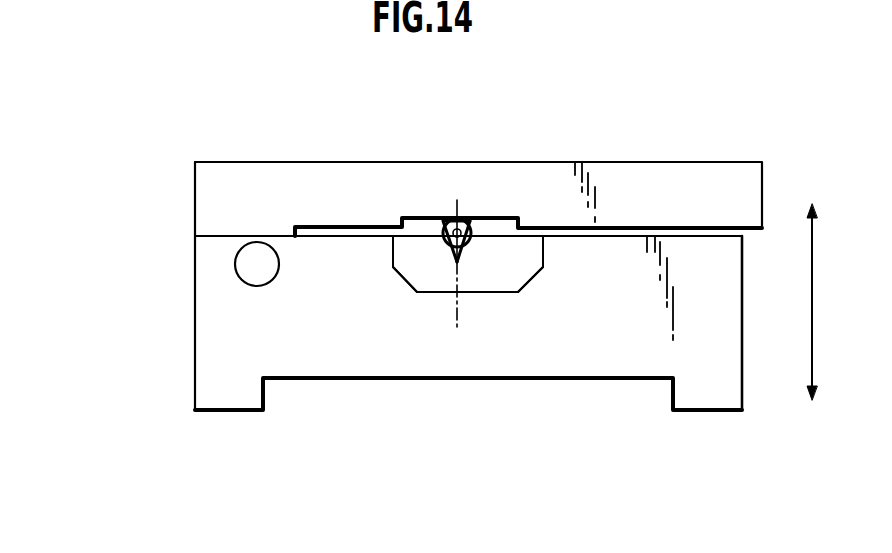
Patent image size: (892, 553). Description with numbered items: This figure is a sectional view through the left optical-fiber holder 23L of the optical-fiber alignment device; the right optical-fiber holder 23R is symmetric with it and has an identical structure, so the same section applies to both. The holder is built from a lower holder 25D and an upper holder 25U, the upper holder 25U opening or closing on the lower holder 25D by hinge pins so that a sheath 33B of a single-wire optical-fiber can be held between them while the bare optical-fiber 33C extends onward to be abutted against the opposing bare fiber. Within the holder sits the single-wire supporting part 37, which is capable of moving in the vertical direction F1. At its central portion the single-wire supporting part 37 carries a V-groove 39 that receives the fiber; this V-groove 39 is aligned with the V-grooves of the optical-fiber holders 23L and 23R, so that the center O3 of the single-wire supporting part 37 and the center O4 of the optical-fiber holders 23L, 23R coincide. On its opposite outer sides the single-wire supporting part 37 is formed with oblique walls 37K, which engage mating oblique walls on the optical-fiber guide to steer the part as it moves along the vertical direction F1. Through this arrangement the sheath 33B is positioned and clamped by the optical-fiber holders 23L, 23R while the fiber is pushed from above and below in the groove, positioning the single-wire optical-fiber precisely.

The left optical-fiber holder 23L is at (407, 267).
The right optical-fiber holder 23R is at (478, 267).
The upper holder 25U is at (297, 182).
The lower holder 25D is at (307, 353).
The single-wire supporting part 37 is at (530, 257).
The oblique walls 37K is at (405, 285).
The V-groove 39 is at (443, 230).
The sheath 33B is at (436, 221).
The bare optical-fiber 33C is at (471, 221).
The center of the single-wire supporting part O3 is at (455, 270).
The center of the optical-fiber holders O4 is at (458, 313).
The vertical direction F1 is at (826, 302).